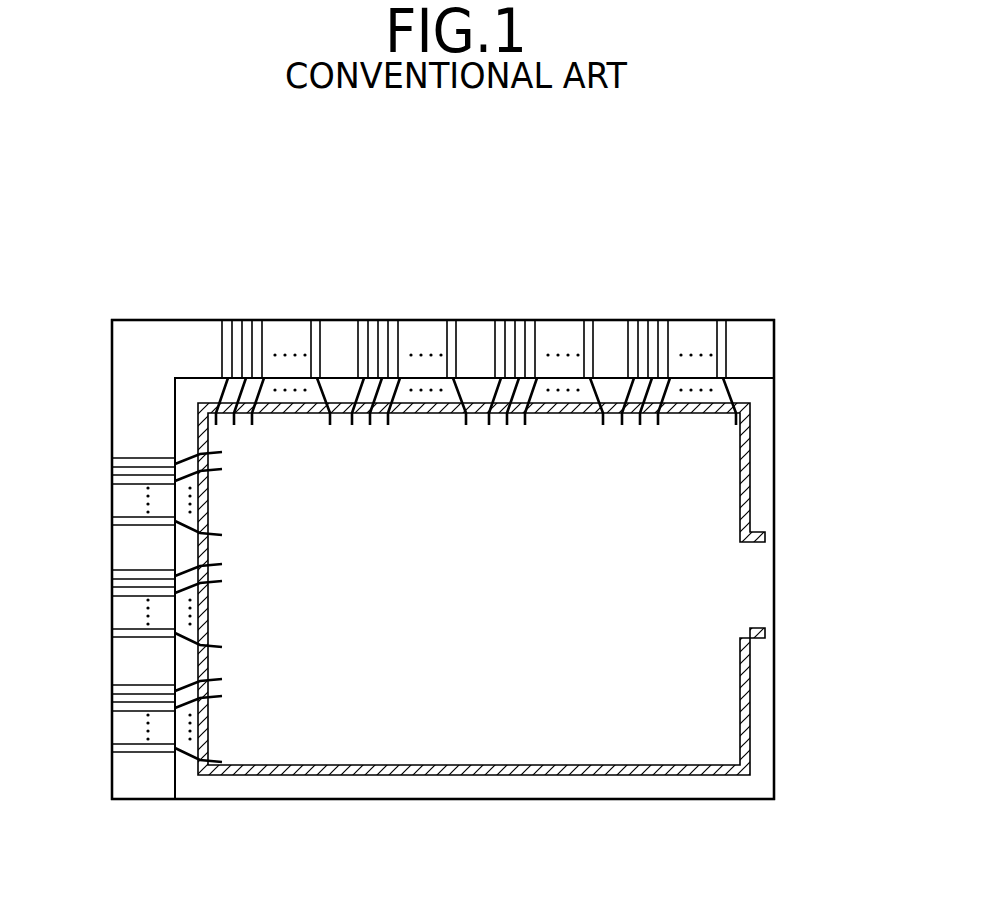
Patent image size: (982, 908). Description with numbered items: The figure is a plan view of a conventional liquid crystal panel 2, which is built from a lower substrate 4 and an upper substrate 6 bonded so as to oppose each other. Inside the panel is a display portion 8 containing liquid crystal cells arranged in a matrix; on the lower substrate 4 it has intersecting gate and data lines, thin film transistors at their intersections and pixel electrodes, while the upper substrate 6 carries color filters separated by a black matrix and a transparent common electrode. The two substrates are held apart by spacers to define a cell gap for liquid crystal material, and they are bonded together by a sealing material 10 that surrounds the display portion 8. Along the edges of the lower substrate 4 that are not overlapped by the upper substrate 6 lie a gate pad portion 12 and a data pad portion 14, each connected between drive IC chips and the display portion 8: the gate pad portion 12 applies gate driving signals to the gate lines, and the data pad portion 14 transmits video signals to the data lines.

The liquid crystal panel 2 is at (233, 200).
The lower substrate 4 is at (778, 356).
The upper substrate 6 is at (757, 404).
The display portion 8 is at (478, 590).
The sealing material 10 is at (760, 518).
The gate pad portion 12 is at (145, 607).
The data pad portion 14 is at (476, 352).